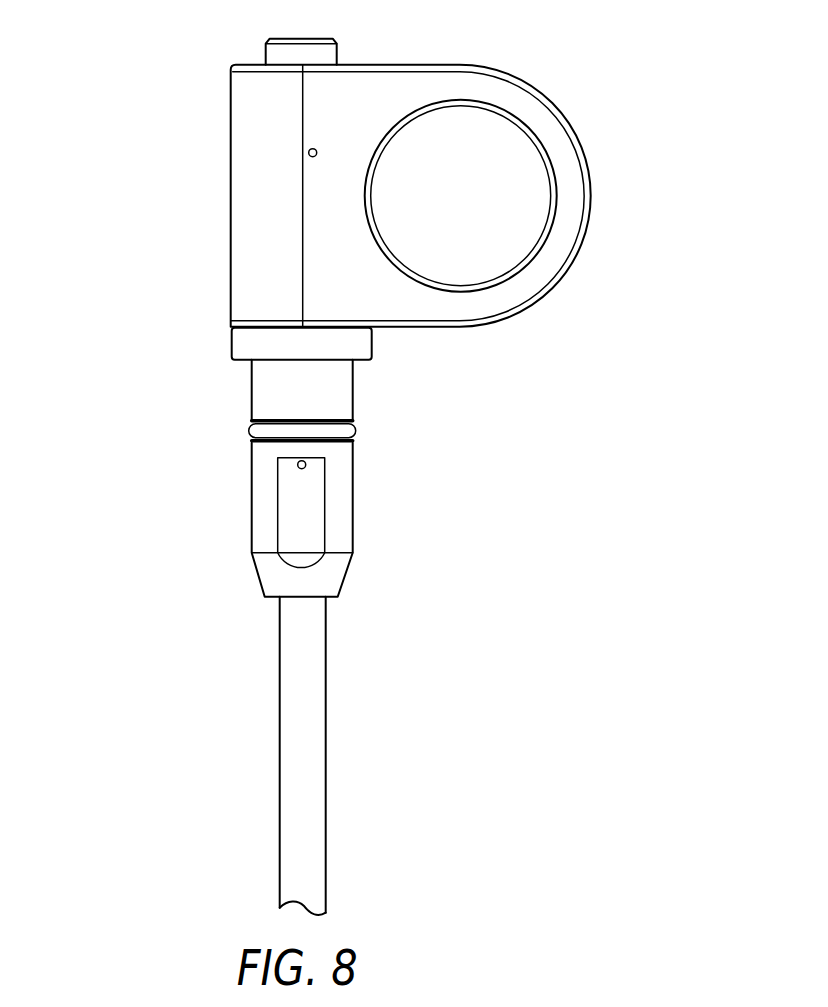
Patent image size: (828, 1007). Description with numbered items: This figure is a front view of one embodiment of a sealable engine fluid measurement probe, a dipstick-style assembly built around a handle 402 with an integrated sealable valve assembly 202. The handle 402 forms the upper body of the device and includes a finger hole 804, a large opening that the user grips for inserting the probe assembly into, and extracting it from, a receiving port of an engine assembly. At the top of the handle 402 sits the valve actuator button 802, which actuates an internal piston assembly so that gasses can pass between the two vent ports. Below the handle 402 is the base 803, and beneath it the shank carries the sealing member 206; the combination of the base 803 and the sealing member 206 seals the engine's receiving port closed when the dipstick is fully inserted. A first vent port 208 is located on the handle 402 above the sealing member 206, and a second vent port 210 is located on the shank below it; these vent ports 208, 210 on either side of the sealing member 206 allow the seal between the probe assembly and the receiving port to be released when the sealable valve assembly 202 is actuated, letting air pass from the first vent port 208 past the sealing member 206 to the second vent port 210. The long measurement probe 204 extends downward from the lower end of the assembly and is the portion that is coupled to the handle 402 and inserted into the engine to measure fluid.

The sealable valve assembly 202 is at (146, 280).
The measurement probe 204 is at (326, 707).
The sealing member 206 is at (253, 432).
The first vent port 208 is at (309, 153).
The second vent port 210 is at (298, 466).
The handle 402 is at (527, 88).
The valve actuator button 802 is at (300, 40).
The base 803 is at (232, 345).
The finger hole 804 is at (519, 251).